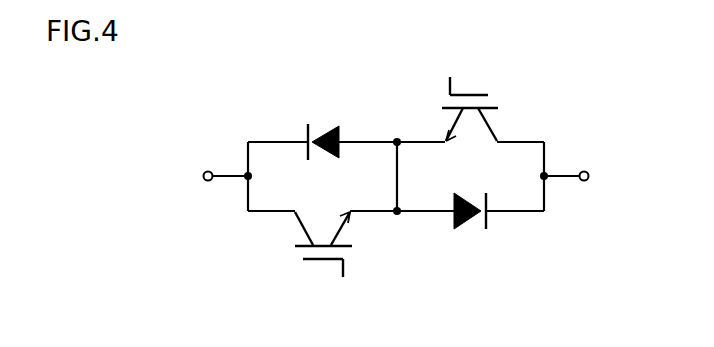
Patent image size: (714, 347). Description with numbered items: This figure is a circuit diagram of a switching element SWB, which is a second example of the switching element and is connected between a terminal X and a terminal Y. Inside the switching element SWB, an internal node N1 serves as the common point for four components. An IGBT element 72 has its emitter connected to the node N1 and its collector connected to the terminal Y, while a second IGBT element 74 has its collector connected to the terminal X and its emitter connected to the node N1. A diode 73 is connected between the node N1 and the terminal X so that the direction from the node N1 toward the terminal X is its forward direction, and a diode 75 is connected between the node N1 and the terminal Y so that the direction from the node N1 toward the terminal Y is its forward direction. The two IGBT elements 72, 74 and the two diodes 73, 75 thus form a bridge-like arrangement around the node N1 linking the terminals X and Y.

The switching element SWB is at (225, 91).
The terminal X is at (217, 176).
The terminal Y is at (574, 176).
The node N1 is at (397, 136).
The IGBT element 72 is at (468, 84).
The diode 73 is at (327, 128).
The IGBT element 74 is at (325, 264).
The diode 75 is at (472, 220).